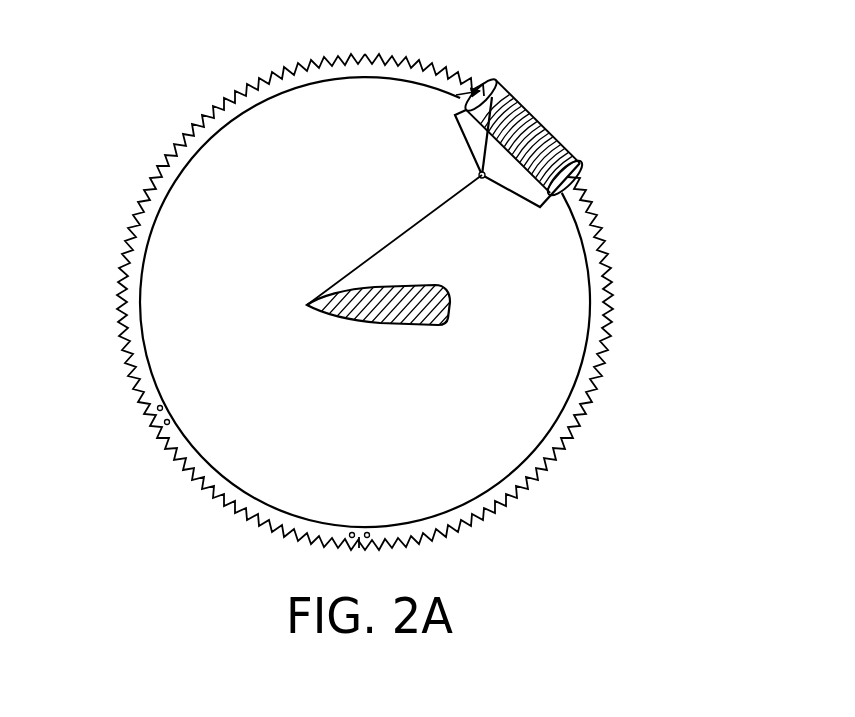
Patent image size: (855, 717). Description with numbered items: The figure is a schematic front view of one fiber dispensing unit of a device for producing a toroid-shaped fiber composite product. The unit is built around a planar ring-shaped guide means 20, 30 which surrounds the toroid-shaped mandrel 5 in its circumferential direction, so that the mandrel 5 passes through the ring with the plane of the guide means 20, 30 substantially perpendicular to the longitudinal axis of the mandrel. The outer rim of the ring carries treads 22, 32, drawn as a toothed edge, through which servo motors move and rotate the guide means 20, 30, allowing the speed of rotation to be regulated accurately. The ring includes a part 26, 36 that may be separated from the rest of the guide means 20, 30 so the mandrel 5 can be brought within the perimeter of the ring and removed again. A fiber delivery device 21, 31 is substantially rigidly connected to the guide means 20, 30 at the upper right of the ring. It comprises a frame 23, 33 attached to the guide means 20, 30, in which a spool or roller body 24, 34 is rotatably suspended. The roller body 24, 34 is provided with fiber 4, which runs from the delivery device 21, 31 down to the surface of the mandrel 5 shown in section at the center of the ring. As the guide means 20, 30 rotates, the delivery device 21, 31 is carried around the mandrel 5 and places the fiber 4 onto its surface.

The ring-shaped guide means 20 is at (384, 276).
The ring-shaped guide means 30 is at (150, 92).
The fiber delivery device 21 is at (519, 104).
The fiber delivery device 31 is at (688, 30).
The treads 22 is at (421, 302).
The treads 32 is at (614, 321).
The frame 23 is at (463, 152).
The frame 33 is at (463, 143).
The roller body 24 is at (563, 137).
The roller body 34 is at (544, 121).
The separable part 26 is at (236, 477).
The separable part 36 is at (210, 487).
The fiber 4 is at (405, 230).
The toroid-shaped mandrel 5 is at (405, 334).